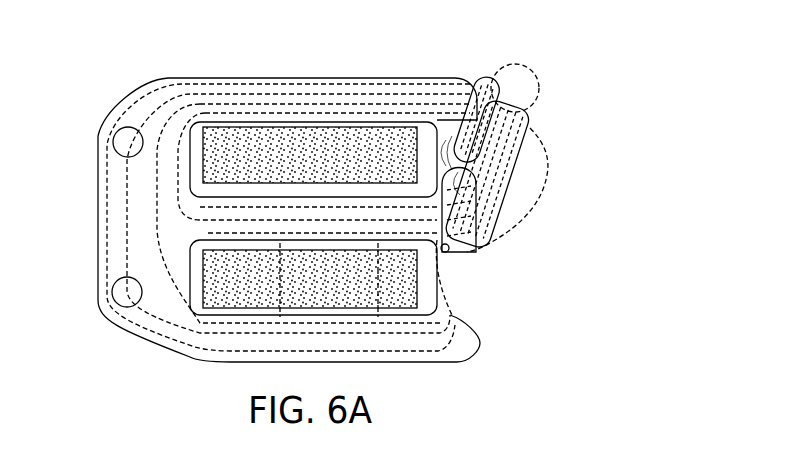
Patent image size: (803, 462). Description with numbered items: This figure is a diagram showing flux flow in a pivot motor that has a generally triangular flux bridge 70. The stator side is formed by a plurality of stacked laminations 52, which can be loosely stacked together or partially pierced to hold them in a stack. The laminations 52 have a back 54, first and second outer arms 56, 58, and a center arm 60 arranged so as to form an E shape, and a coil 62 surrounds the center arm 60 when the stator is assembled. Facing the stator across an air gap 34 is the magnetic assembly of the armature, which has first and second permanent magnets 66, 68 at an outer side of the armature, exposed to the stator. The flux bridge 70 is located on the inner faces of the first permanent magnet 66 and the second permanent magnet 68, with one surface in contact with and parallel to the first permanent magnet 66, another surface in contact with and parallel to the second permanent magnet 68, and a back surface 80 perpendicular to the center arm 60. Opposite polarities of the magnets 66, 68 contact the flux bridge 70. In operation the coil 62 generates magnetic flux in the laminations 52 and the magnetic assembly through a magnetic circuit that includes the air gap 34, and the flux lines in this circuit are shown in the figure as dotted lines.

The air gap 34 is at (477, 110).
The stacked laminations 52 is at (130, 107).
The back 54 is at (97, 210).
The first outer arm 56 is at (322, 76).
The second outer arm 58 is at (457, 363).
The center arm 60 is at (310, 207).
The coil 62 is at (226, 137).
The first permanent magnet 66 is at (495, 103).
The second permanent magnet 68 is at (443, 243).
The flux bridge 70 is at (530, 150).
The back surface 80 is at (503, 197).